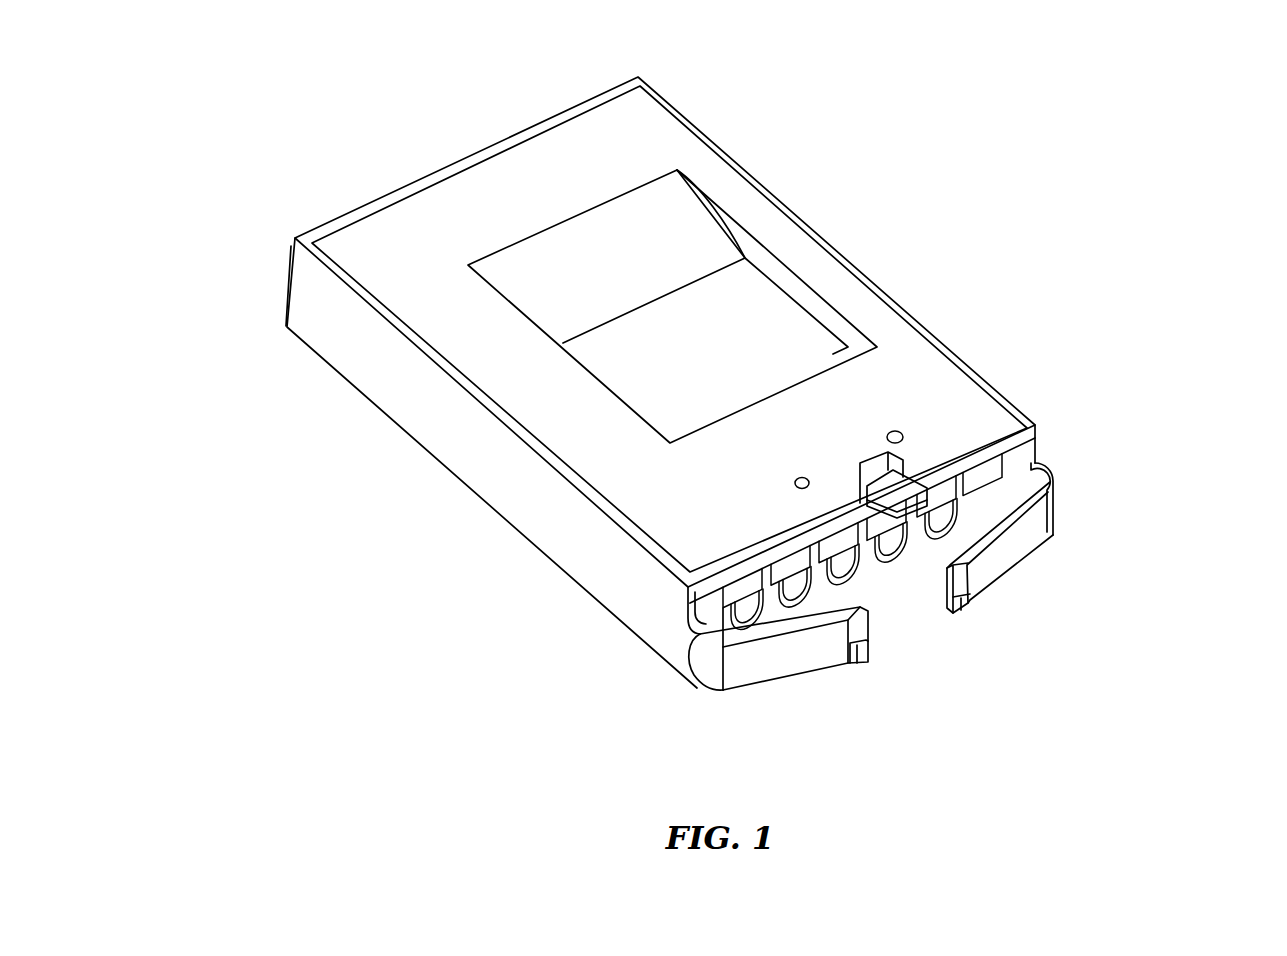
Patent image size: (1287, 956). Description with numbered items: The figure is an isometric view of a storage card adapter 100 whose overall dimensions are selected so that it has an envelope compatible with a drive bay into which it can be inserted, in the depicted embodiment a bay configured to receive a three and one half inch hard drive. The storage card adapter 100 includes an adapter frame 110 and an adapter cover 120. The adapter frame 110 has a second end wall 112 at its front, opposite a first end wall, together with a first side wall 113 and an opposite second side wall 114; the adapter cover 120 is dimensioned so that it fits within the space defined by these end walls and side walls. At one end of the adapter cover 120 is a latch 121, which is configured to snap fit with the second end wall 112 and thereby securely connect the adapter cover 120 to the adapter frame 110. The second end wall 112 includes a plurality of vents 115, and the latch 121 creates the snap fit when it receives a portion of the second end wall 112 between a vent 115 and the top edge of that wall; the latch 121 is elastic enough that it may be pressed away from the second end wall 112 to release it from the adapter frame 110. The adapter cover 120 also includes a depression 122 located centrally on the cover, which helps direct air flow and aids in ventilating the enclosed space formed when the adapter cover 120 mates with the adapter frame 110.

The storage card adapter 100 is at (346, 117).
The adapter frame 110 is at (520, 533).
The second end wall 112 is at (705, 625).
The first side wall 113 is at (420, 403).
The second side wall 114 is at (947, 335).
The vents 115 is at (852, 535).
The adapter cover 120 is at (933, 405).
The latch 121 is at (912, 487).
The depression 122 is at (730, 320).